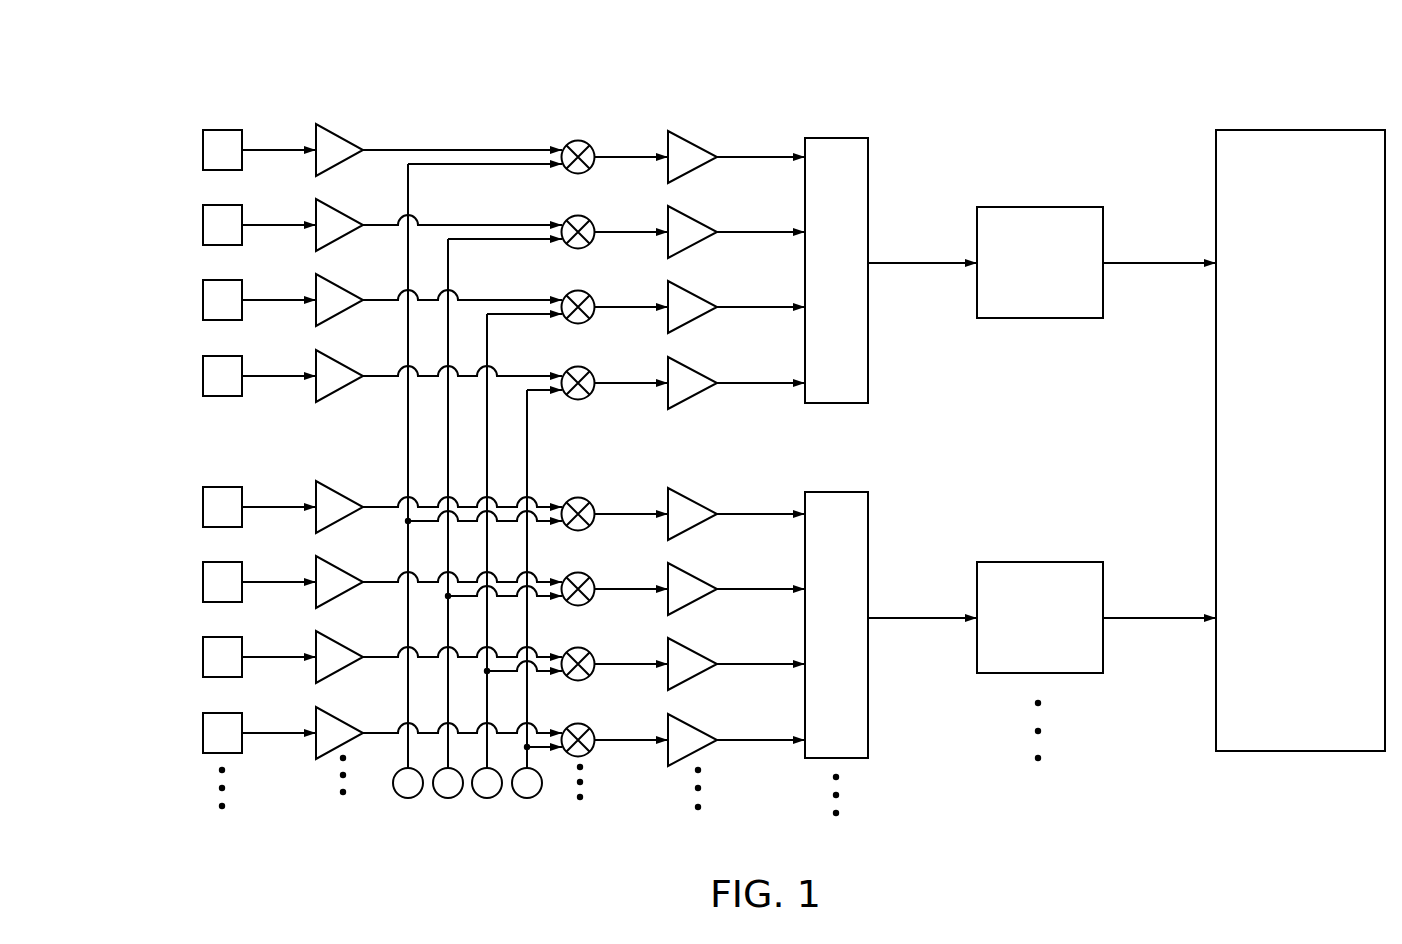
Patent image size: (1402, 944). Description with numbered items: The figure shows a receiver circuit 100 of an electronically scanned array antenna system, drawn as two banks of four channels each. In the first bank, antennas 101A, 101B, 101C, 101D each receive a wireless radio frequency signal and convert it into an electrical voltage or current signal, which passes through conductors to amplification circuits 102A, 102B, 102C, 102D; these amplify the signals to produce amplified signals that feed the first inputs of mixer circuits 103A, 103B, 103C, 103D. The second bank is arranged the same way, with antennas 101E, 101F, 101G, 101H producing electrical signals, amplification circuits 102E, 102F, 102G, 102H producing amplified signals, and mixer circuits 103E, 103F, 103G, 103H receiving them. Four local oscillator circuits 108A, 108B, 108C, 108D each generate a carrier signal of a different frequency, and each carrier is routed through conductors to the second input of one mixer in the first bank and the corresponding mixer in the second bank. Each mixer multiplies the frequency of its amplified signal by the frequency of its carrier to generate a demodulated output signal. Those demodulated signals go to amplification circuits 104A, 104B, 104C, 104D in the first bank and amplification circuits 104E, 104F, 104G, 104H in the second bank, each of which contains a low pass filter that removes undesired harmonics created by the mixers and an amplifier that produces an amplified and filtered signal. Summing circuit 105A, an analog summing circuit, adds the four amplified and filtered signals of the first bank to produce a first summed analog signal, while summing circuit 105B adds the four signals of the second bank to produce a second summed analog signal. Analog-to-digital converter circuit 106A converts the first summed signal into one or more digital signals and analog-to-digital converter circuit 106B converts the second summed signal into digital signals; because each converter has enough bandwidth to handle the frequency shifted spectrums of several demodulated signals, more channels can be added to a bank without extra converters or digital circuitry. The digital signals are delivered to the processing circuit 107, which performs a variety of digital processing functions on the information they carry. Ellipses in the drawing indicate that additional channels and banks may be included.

The receiver circuit 100 is at (469, 50).
The antenna 101A is at (222, 130).
The antenna 101B is at (222, 205).
The antenna 101C is at (222, 280).
The antenna 101D is at (222, 356).
The antenna 101E is at (222, 487).
The antenna 101F is at (222, 562).
The antenna 101G is at (222, 637).
The antenna 101H is at (222, 713).
The amplification circuit 102A is at (330, 132).
The amplification circuit 102B is at (330, 207).
The amplification circuit 102C is at (330, 282).
The amplification circuit 102D is at (330, 358).
The amplification circuit 102E is at (330, 489).
The amplification circuit 102F is at (330, 564).
The amplification circuit 102G is at (330, 639).
The amplification circuit 102H is at (330, 715).
The mixer circuit 103A is at (570, 143).
The mixer circuit 103B is at (570, 218).
The mixer circuit 103C is at (570, 293).
The mixer circuit 103D is at (570, 369).
The mixer circuit 103E is at (570, 500).
The mixer circuit 103F is at (570, 575).
The mixer circuit 103G is at (570, 650).
The mixer circuit 103H is at (570, 726).
The amplification circuit 104A is at (688, 142).
The amplification circuit 104B is at (688, 217).
The amplification circuit 104C is at (688, 292).
The amplification circuit 104D is at (688, 368).
The amplification circuit 104E is at (688, 499).
The amplification circuit 104F is at (688, 574).
The amplification circuit 104G is at (688, 649).
The amplification circuit 104H is at (688, 725).
The summing circuit 105A is at (836, 138).
The summing circuit 105B is at (836, 492).
The analog-to-digital converter circuit 106A is at (1040, 207).
The analog-to-digital converter circuit 106B is at (1040, 562).
The processing circuit 107 is at (1285, 130).
The local oscillator circuit 108A is at (405, 798).
The local oscillator circuit 108B is at (448, 798).
The local oscillator circuit 108C is at (487, 798).
The local oscillator circuit 108D is at (527, 798).